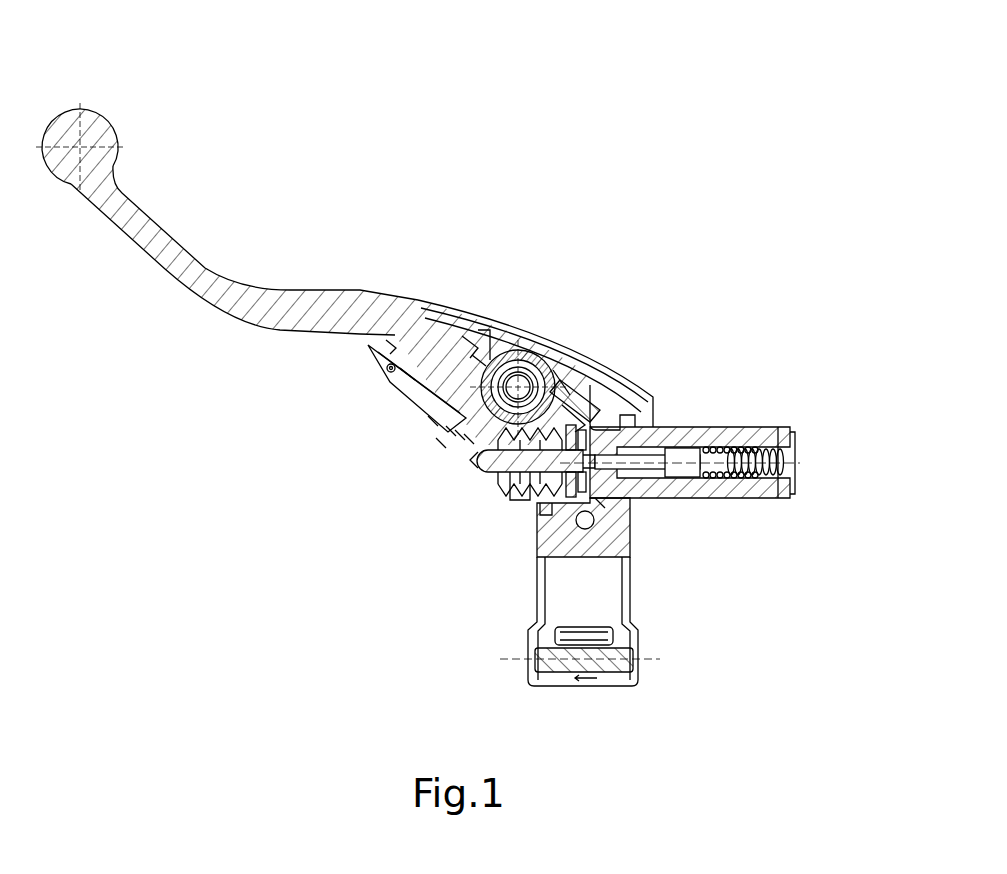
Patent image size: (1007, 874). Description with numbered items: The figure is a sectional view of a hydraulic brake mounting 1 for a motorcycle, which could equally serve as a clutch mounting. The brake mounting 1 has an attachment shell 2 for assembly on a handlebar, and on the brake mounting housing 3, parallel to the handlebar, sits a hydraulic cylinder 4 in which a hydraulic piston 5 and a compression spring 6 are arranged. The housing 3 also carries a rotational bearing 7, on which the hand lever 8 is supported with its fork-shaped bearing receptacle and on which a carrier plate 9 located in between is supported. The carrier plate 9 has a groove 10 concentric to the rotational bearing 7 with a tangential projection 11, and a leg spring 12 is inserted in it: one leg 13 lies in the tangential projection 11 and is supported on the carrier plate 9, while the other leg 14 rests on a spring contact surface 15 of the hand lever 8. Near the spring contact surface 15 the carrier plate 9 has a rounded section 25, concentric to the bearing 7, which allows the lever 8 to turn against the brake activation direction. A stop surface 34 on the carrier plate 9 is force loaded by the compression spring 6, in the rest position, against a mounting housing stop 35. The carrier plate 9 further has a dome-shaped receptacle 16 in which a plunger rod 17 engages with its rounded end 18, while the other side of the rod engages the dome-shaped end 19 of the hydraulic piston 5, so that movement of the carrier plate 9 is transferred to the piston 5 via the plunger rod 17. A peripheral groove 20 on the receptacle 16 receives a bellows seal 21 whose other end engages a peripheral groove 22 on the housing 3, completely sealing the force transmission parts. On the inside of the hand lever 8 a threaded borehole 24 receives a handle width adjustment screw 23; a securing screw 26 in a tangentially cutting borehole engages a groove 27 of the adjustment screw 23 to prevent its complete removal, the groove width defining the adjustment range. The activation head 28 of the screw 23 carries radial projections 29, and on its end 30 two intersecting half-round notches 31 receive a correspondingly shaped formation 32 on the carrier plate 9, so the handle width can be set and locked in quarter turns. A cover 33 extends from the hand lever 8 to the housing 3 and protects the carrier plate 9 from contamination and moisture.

The brake mounting 1 is at (628, 124).
The attachment shell 2 is at (620, 614).
The brake mounting housing 3 is at (517, 463).
The hydraulic cylinder 4 is at (735, 430).
The hydraulic piston 5 is at (685, 455).
The compression spring 6 is at (765, 450).
The rotational bearing 7 is at (523, 392).
The hand lever 8 is at (212, 272).
The carrier plate 9 is at (476, 446).
The groove 10 is at (505, 350).
The tangential projection 11 is at (553, 390).
The leg spring 12 is at (518, 375).
The leg 13 is at (570, 393).
The leg 14 is at (478, 358).
The spring contact surface 15 is at (470, 348).
The dome-shaped receptacle 16 is at (496, 460).
The plunger rod 17 is at (473, 435).
The rounded end 18 is at (450, 433).
The dome-shaped end 19 is at (560, 505).
The peripheral groove 20 is at (486, 452).
The bellows seal 21 is at (487, 463).
The peripheral groove 22 is at (532, 530).
The handle width adjustment screw 23 is at (420, 390).
The threaded borehole 24 is at (390, 346).
The rounded section 25 is at (490, 360).
The securing screw 26 is at (387, 368).
The groove 27 is at (407, 373).
The activation head 28 is at (431, 442).
The radial projections 29 is at (426, 421).
The end 30 is at (448, 430).
The notches 31 is at (457, 433).
The formation 32 is at (466, 437).
The cover 33 is at (650, 397).
The stop surface 34 is at (575, 412).
The mounting housing stop 35 is at (590, 462).